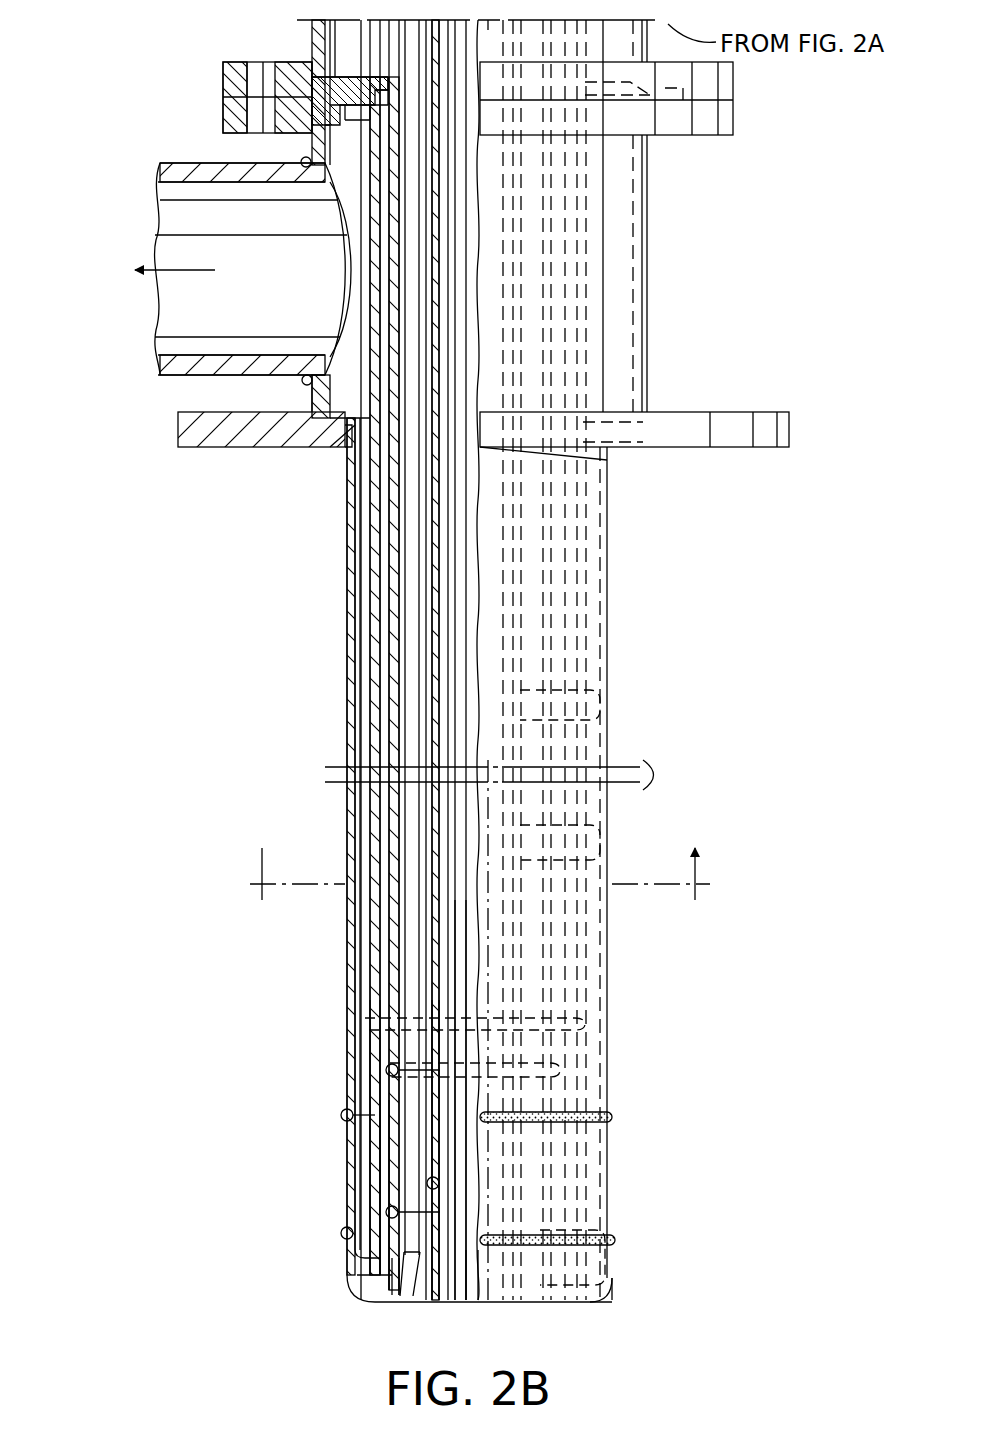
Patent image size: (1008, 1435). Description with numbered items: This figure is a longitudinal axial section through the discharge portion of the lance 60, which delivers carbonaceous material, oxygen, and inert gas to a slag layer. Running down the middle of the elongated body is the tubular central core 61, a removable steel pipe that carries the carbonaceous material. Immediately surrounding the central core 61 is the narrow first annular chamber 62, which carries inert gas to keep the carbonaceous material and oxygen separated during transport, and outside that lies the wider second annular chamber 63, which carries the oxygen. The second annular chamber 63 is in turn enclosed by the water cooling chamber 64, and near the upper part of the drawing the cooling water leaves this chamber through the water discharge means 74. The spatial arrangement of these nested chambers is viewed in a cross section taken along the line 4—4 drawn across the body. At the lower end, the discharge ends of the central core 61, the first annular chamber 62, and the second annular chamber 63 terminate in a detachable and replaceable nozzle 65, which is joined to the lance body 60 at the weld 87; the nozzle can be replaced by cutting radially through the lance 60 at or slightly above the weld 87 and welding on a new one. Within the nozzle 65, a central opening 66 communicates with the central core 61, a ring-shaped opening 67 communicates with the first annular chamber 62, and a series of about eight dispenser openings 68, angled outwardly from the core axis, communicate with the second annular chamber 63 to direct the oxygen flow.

The water discharge means 74 is at (156, 322).
The lance 60 is at (620, 1094).
The central core 61 is at (456, 992).
The first annular chamber 62 is at (440, 1088).
The second annular chamber 63 is at (376, 1112).
The water cooling chamber 64 is at (383, 1168).
The nozzle 65 is at (620, 1262).
The central opening 66 is at (470, 1282).
The ring-shaped opening 67 is at (445, 1300).
The dispenser openings 68 is at (403, 1293).
The weld 87 is at (600, 1237).
The section line 4— 4 is at (480, 891).